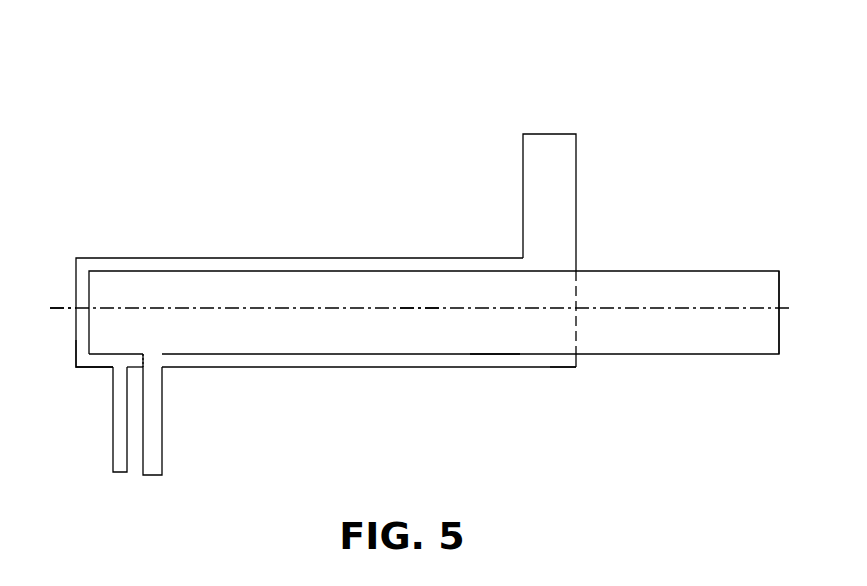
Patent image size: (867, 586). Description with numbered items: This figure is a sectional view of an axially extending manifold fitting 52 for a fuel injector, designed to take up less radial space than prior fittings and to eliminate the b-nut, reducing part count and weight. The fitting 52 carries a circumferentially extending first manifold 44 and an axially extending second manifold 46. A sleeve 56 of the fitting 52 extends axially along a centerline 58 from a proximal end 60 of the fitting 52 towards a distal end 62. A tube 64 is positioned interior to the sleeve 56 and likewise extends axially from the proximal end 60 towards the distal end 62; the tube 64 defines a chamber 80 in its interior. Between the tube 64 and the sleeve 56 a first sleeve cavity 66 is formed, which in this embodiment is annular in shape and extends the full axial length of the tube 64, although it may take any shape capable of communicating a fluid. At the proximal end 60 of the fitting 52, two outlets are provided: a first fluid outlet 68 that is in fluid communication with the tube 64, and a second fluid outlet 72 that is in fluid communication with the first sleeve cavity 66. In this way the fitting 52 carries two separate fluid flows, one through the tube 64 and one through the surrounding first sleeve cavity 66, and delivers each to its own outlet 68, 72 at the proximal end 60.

The manifold fitting 52 is at (230, 92).
The sleeve 56 is at (187, 257).
The first sleeve cavity 66 is at (352, 271).
The first manifold 44 is at (548, 167).
The second manifold 46 is at (656, 293).
The centerline 58 is at (66, 308).
The proximal end 60 is at (88, 388).
The second fluid outlet 72 is at (113, 420).
The first fluid outlet 68 is at (162, 440).
The chamber 80 is at (417, 337).
The tube 64 is at (492, 355).
The distal end 62 is at (566, 382).